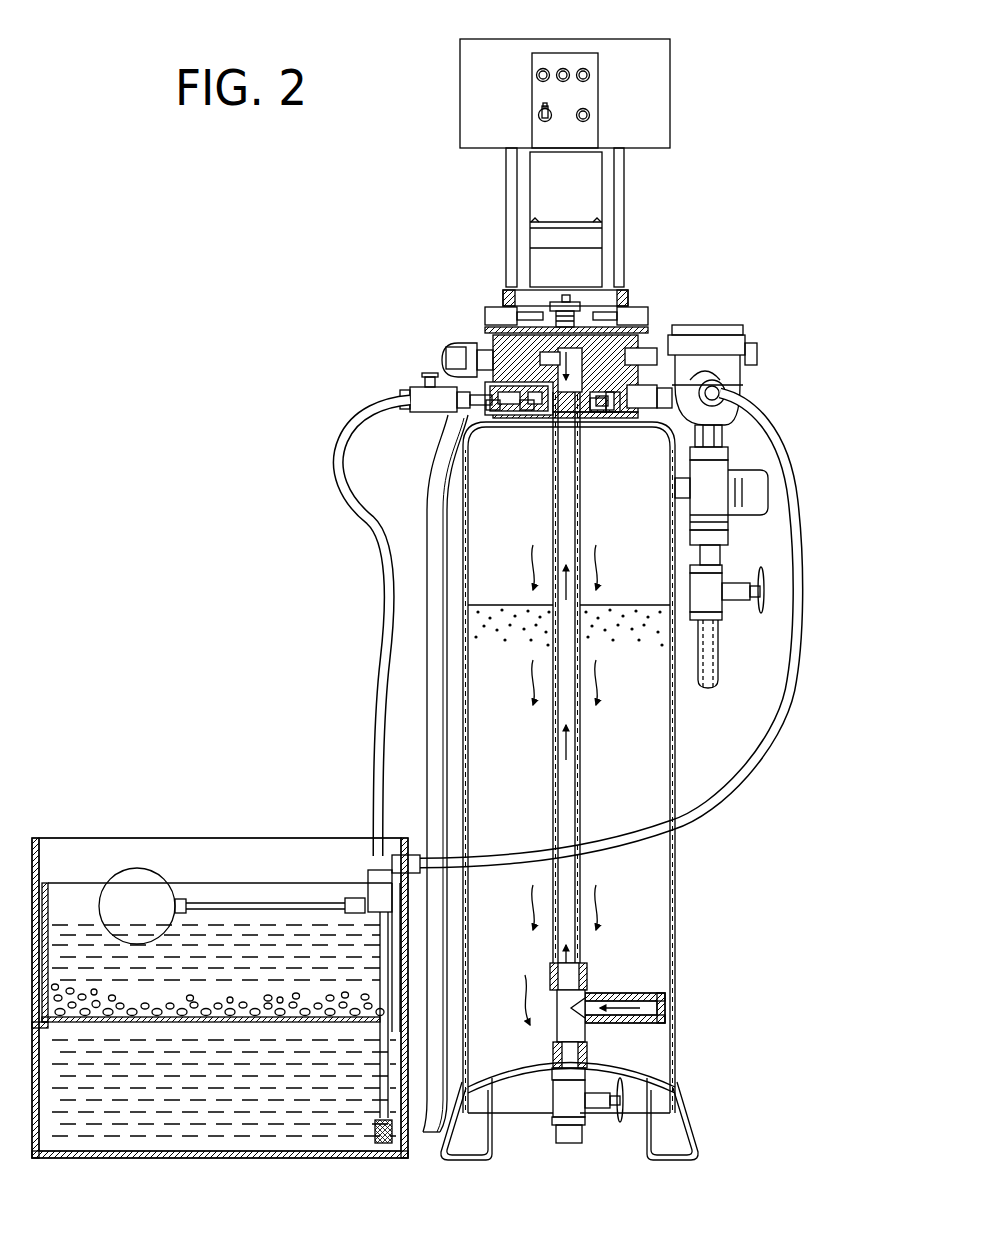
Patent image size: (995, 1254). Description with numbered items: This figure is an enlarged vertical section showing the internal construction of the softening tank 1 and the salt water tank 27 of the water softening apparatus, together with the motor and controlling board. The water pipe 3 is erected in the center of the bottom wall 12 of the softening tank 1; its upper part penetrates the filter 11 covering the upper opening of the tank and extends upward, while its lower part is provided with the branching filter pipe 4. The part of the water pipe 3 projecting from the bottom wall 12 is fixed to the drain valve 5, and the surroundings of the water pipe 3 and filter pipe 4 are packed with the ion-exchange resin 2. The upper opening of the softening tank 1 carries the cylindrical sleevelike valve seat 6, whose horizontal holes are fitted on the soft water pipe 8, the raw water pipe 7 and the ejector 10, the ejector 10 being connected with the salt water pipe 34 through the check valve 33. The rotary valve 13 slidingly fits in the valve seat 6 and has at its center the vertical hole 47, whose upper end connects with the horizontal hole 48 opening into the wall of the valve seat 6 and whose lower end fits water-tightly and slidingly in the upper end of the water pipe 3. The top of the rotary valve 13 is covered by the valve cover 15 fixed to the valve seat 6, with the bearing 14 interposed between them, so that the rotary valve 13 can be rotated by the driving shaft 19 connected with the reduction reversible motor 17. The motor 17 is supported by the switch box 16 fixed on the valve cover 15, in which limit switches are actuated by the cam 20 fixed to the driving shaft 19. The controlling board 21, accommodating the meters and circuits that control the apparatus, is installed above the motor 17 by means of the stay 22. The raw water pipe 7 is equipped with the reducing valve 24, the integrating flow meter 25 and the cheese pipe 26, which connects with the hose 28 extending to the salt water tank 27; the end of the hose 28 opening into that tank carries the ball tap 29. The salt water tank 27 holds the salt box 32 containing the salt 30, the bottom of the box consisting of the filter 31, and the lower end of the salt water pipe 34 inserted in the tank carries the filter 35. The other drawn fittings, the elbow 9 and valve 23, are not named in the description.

The softening tank 1 is at (677, 848).
The ion-exchange resin 2 is at (508, 789).
The water pipe 3 is at (581, 878).
The filter pipe 4 is at (627, 993).
The drain valve 5 is at (568, 1098).
The valve seat 6 is at (628, 378).
The raw water pipe 7 is at (660, 420).
The soft water pipe 8 is at (743, 342).
The elbow fitting 9 is at (462, 348).
The ejector 10 is at (486, 418).
The filter 11 is at (606, 415).
The bottom wall 12 is at (495, 1070).
The rotary valve 13 is at (528, 415).
The bearing 14 is at (598, 340).
The valve cover 15 is at (640, 312).
The switch box 16 is at (625, 298).
The reduction reversible motor 17 is at (553, 184).
The driving shaft 19 is at (563, 302).
The cam 20 is at (582, 302).
The controlling board 21 is at (670, 80).
The stay 22 is at (625, 174).
The valve 23 is at (710, 600).
The reducing valve 24 is at (755, 492).
The integrating flow meter 25 is at (738, 378).
The cheese pipe 26 is at (730, 400).
The salt water tank 27 is at (198, 848).
The hose 28 is at (780, 448).
The ball tap 29 is at (348, 900).
The salt 30 is at (106, 1010).
The filter 31 is at (166, 1022).
The salt box 32 is at (275, 897).
The check valve 33 is at (440, 405).
The salt water pipe 34 is at (384, 677).
The filter 35 is at (375, 1128).
The vertical hole 47 is at (560, 383).
The horizontal hole 48 is at (593, 412).